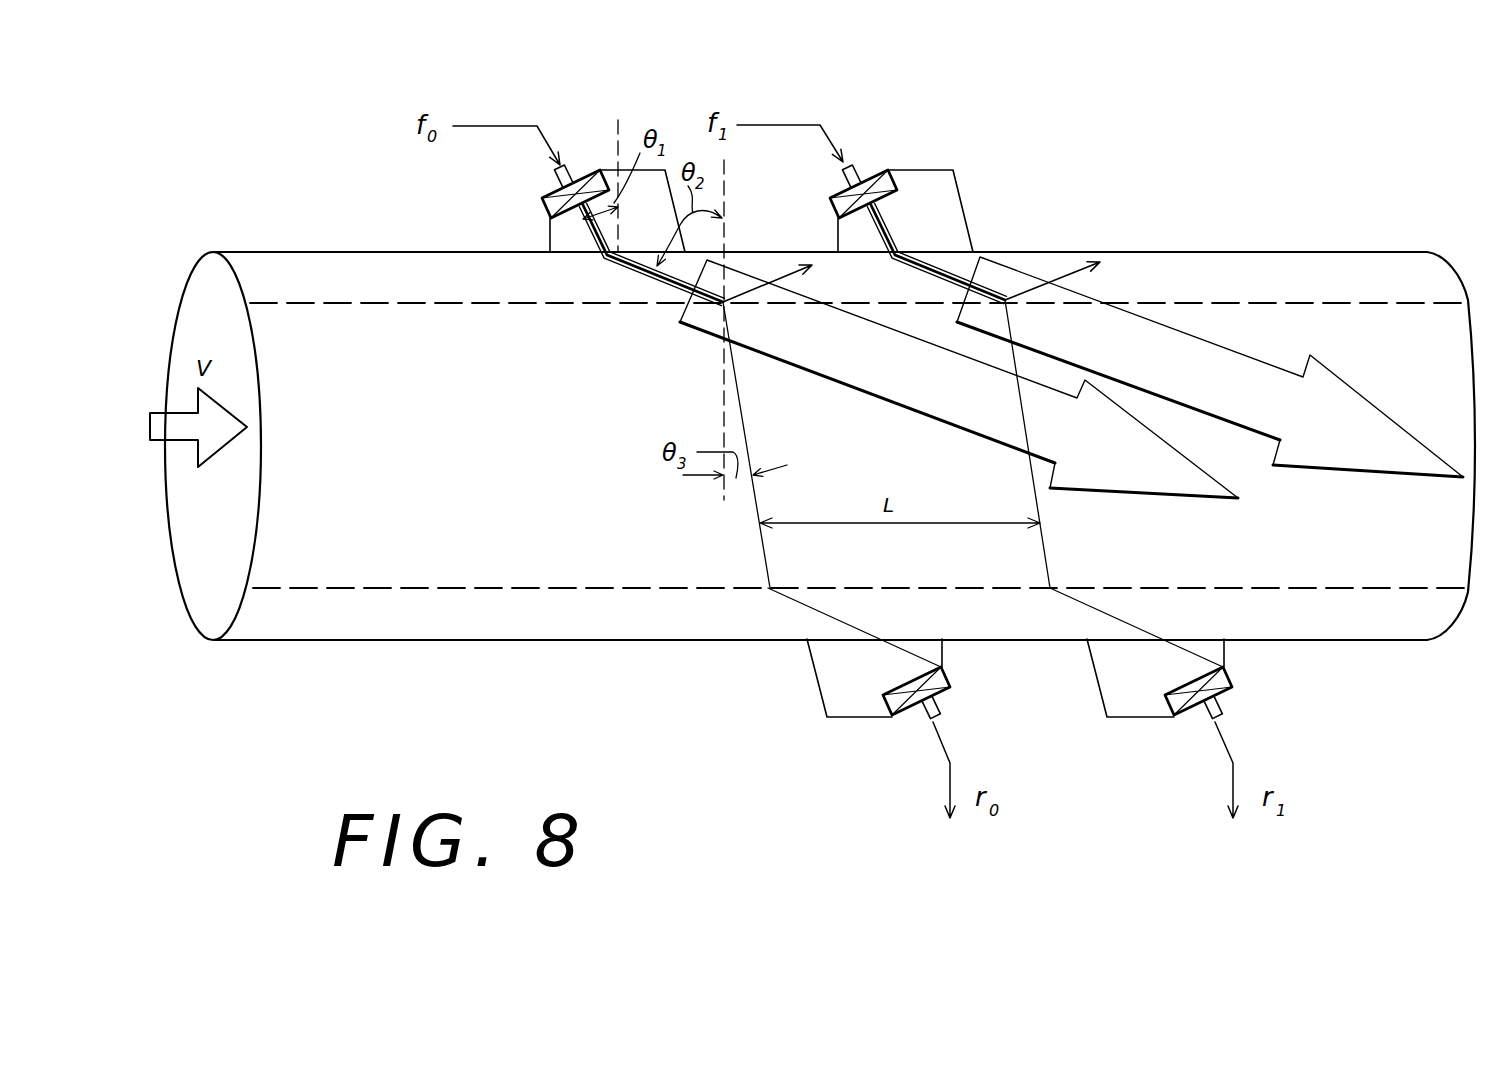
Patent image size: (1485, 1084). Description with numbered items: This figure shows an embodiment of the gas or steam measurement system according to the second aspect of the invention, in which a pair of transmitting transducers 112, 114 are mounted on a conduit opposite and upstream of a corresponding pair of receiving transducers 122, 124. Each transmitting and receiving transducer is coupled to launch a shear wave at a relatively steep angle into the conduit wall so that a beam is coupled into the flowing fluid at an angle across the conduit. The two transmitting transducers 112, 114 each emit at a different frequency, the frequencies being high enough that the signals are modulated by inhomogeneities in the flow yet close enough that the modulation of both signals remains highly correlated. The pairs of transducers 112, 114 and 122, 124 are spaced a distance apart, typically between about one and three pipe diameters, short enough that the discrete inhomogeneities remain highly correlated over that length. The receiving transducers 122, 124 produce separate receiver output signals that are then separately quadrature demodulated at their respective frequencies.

The transmitting transducer 112 is at (575, 112).
The transmitting transducer 114 is at (918, 135).
The receiving transducer 122 is at (879, 746).
The receiving transducer 124 is at (1185, 746).